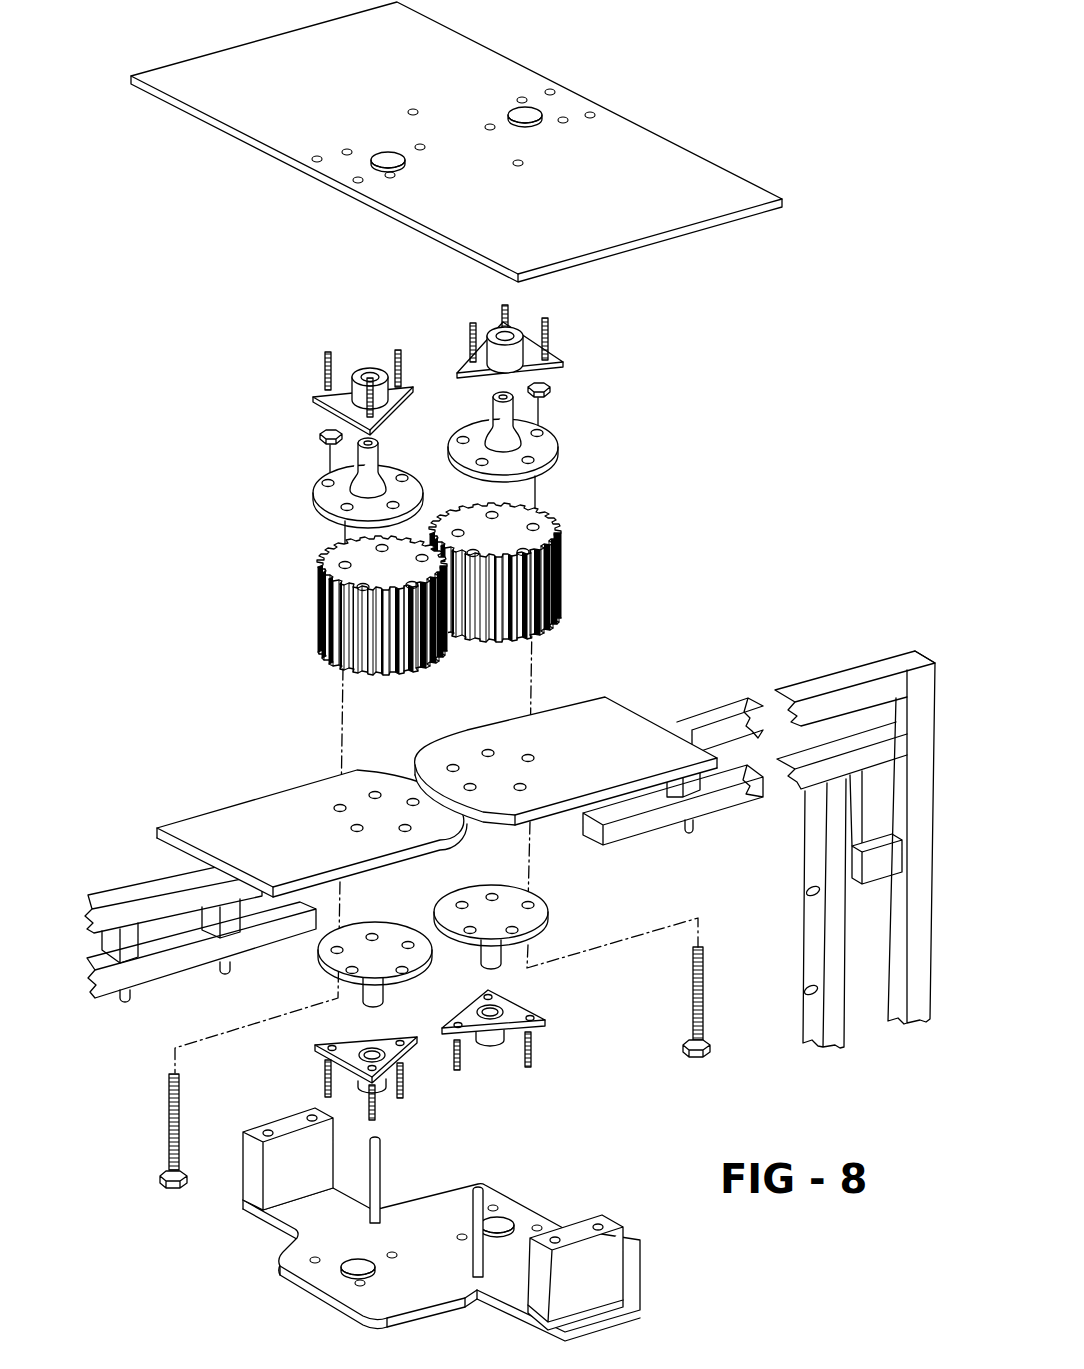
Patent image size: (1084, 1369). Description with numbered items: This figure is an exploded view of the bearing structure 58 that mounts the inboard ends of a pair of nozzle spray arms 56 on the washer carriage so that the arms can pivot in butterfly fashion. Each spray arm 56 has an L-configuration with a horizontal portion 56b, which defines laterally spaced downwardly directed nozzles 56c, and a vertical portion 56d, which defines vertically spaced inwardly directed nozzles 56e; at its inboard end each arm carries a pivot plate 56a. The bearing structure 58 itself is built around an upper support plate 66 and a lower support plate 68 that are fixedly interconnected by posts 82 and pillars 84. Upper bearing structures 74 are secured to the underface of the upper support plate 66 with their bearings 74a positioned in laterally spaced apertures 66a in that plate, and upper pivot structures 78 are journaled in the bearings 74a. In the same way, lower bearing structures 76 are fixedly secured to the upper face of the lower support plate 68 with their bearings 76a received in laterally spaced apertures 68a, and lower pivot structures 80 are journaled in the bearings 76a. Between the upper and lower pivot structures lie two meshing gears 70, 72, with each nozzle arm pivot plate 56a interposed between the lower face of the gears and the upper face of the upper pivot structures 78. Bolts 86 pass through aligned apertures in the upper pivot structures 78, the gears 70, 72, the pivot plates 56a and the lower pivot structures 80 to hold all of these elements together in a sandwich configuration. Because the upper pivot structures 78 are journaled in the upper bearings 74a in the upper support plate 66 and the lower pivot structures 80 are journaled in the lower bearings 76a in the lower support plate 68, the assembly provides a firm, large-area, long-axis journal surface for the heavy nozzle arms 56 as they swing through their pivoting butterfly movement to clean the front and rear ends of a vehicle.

The nozzle spray arm 56 is at (133, 885).
The pivot plate 56a is at (262, 815).
The horizontal portion 56b is at (237, 867).
The downwardly directed nozzle 56c is at (125, 1001).
The vertical portion 56d is at (892, 992).
The inwardly directed nozzle 56e is at (808, 890).
The bearing structure 58 is at (698, 515).
The upper support plate 66 is at (718, 182).
The aperture 66a is at (371, 161).
The lower support plate 68 is at (523, 1210).
The aperture 68a is at (341, 1270).
The gear 70 is at (318, 607).
The gear 72 is at (562, 572).
The upper bearing structure 74 is at (320, 400).
The upper bearing 74a is at (360, 370).
The lower bearing structure 76 is at (538, 1032).
The lower bearing 76a is at (504, 1009).
The upper pivot structure 78 is at (553, 447).
The lower pivot structure 80 is at (330, 963).
The post 82 is at (472, 1207).
The pillar 84 is at (618, 1250).
The bolt 86 is at (167, 1130).